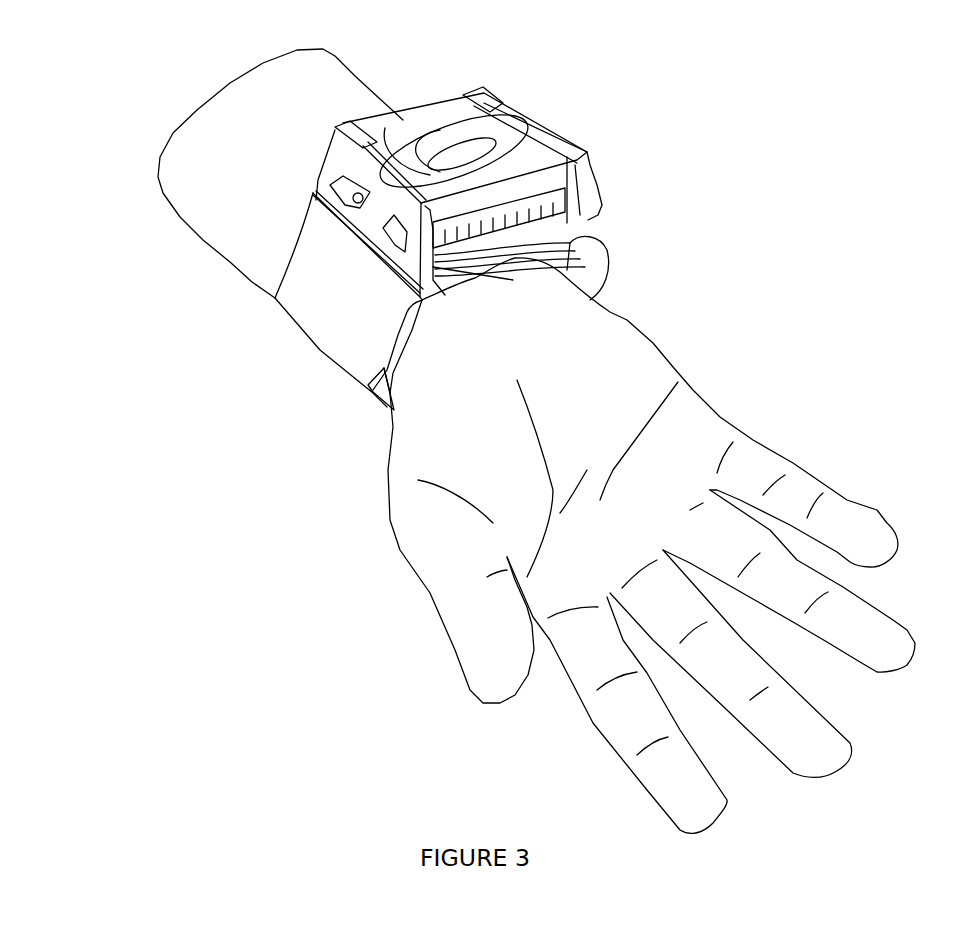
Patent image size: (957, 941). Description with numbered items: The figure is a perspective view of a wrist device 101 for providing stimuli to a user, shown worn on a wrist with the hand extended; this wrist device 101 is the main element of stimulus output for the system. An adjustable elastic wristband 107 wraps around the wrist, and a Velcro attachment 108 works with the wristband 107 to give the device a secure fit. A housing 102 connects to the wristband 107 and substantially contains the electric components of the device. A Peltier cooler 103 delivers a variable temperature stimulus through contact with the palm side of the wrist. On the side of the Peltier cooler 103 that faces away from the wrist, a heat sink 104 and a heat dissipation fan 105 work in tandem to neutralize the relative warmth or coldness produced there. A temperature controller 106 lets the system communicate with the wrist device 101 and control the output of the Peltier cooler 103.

The wrist device 101 is at (287, 238).
The housing 102 is at (370, 187).
The Peltier cooler 103 is at (563, 270).
The heat sink 104 is at (477, 232).
The heat dissipation fan 105 is at (457, 148).
The temperature controller 106 is at (583, 160).
The adjustable elastic wristband 107 is at (357, 327).
The Velcro attachment 108 is at (387, 370).